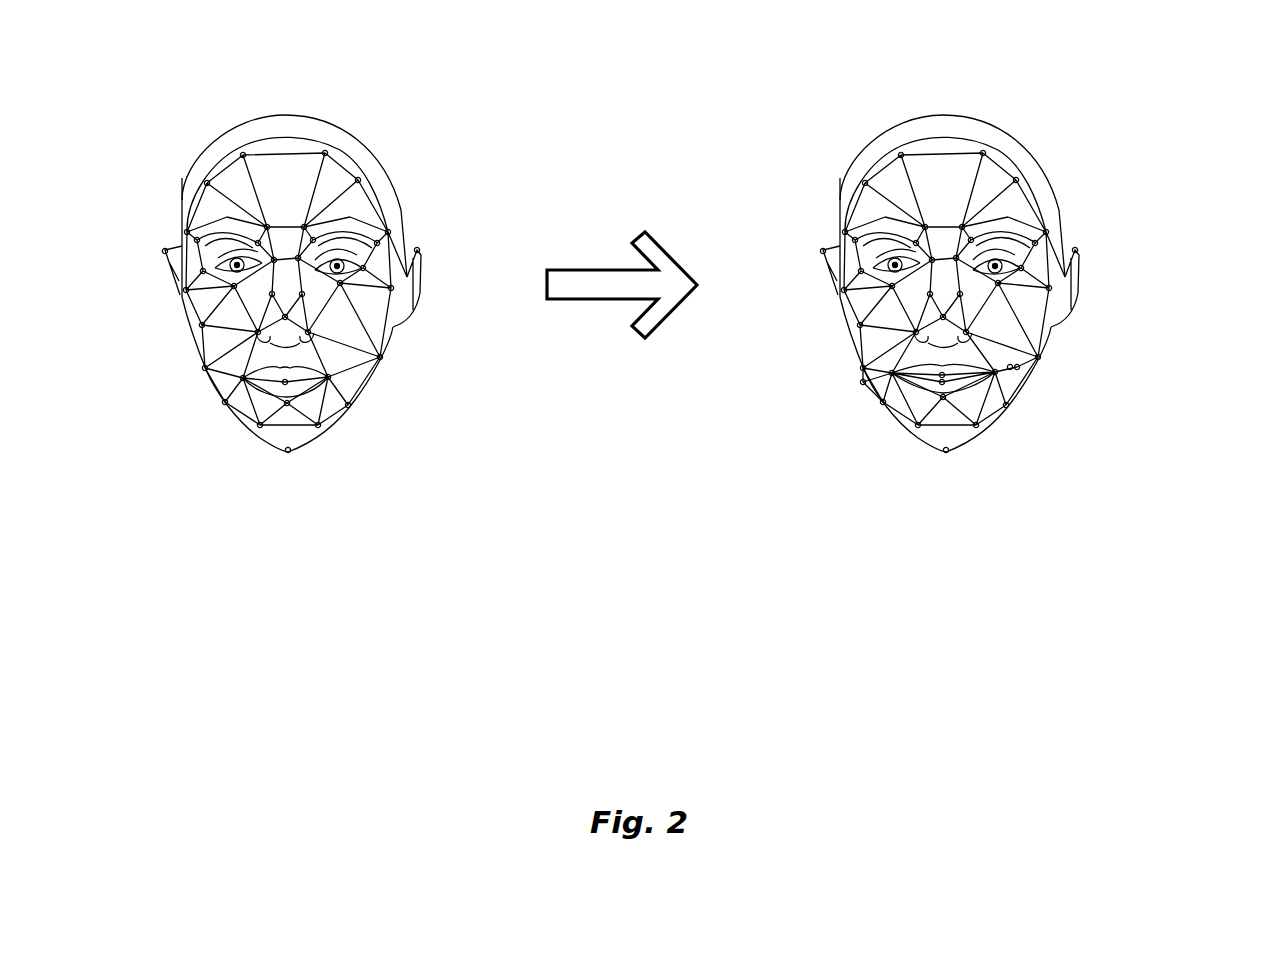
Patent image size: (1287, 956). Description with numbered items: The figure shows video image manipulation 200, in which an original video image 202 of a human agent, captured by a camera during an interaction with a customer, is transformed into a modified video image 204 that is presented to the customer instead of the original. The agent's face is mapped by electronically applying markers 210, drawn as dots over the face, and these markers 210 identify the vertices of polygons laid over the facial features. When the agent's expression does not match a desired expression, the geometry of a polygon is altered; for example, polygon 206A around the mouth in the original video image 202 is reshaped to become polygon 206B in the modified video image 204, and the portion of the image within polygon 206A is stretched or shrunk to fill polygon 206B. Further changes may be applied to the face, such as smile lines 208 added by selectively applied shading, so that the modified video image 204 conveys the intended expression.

The video image manipulation 200 is at (1198, 76).
The original video image 202 is at (388, 78).
The modified video image 204 is at (1018, 78).
The polygon 206A is at (347, 378).
The polygon 206B is at (1017, 376).
The smile lines 208 is at (866, 383).
The markers 210 is at (405, 358).